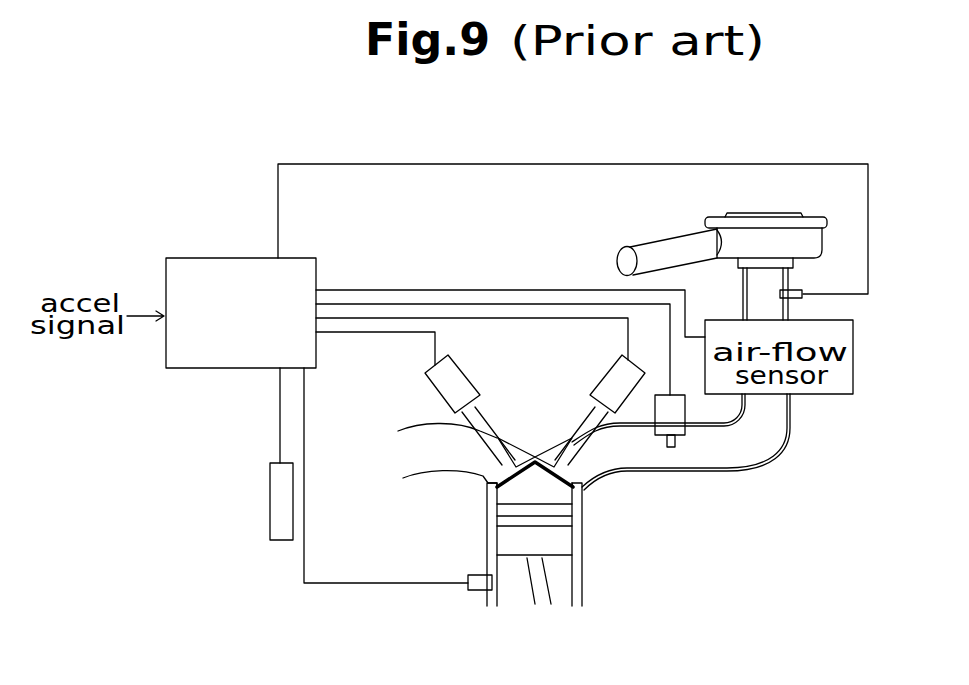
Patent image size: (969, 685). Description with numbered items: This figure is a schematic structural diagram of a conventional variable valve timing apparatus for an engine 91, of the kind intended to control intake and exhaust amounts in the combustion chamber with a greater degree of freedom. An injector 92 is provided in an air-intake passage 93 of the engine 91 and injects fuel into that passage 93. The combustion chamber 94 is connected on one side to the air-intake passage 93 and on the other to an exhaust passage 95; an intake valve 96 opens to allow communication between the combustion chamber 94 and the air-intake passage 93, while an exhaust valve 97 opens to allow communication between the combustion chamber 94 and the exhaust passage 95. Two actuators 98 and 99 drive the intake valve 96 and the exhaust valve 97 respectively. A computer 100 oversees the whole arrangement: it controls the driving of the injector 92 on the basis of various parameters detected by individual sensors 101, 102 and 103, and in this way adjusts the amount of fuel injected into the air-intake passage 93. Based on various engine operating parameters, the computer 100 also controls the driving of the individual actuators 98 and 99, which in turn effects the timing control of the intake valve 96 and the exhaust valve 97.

The engine 91 is at (592, 597).
The injector 92 is at (685, 435).
The air-intake passage 93 is at (765, 448).
The combustion chamber 94 is at (492, 496).
The exhaust passage 95 is at (398, 431).
The intake valve 96 is at (595, 472).
The exhaust valve 97 is at (482, 412).
The actuator 98 is at (598, 378).
The actuator 99 is at (425, 380).
The computer 100 is at (206, 369).
The sensor 101 is at (802, 294).
The sensor 102 is at (270, 514).
The sensor 103 is at (474, 592).